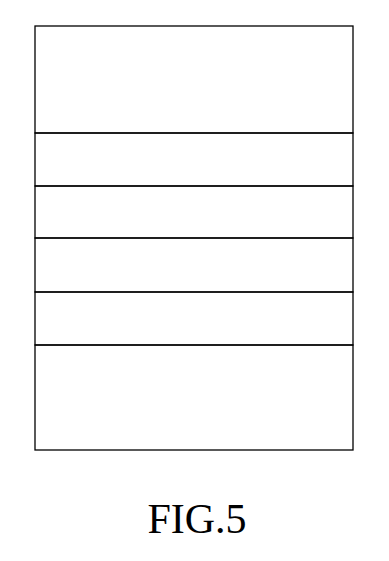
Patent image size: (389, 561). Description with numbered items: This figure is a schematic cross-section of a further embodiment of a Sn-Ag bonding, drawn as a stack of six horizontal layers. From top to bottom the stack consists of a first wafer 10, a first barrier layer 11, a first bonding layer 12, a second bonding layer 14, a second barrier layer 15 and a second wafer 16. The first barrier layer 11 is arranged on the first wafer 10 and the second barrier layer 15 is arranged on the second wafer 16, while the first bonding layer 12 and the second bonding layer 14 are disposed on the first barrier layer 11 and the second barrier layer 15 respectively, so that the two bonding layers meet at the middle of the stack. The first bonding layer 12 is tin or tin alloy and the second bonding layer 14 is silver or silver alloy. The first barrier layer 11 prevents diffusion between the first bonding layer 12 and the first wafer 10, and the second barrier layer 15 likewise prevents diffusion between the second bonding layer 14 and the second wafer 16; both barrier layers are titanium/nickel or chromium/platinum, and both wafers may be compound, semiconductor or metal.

The first wafer 10 is at (182, 88).
The first barrier layer 11 is at (182, 168).
The first bonding layer 12 is at (182, 222).
The second bonding layer 14 is at (182, 276).
The second barrier layer 15 is at (182, 328).
The second wafer 16 is at (182, 406).